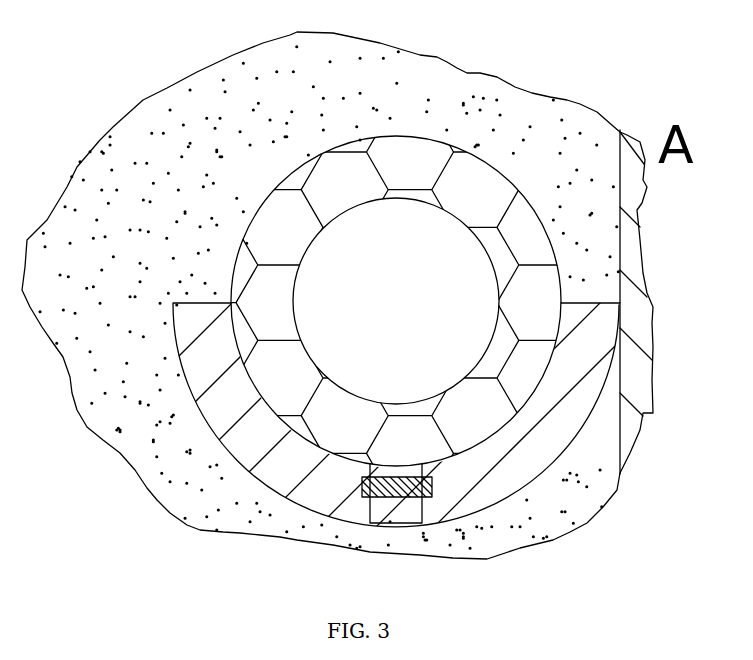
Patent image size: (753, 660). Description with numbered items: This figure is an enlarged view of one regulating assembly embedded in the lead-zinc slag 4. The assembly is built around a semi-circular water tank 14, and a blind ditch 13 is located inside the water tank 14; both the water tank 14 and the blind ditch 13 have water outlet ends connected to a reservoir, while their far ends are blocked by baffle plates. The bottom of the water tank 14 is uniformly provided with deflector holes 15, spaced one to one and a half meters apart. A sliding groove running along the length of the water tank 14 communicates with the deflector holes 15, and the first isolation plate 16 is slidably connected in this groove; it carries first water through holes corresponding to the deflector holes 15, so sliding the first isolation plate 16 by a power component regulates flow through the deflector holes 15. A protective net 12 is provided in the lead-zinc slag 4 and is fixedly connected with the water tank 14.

The lead-zinc slag 4 is at (535, 125).
The protective net 12 is at (638, 313).
The blind ditch 13 is at (390, 158).
The water tank 14 is at (575, 410).
The deflector hole 15 is at (403, 513).
The first isolation plate 16 is at (384, 499).